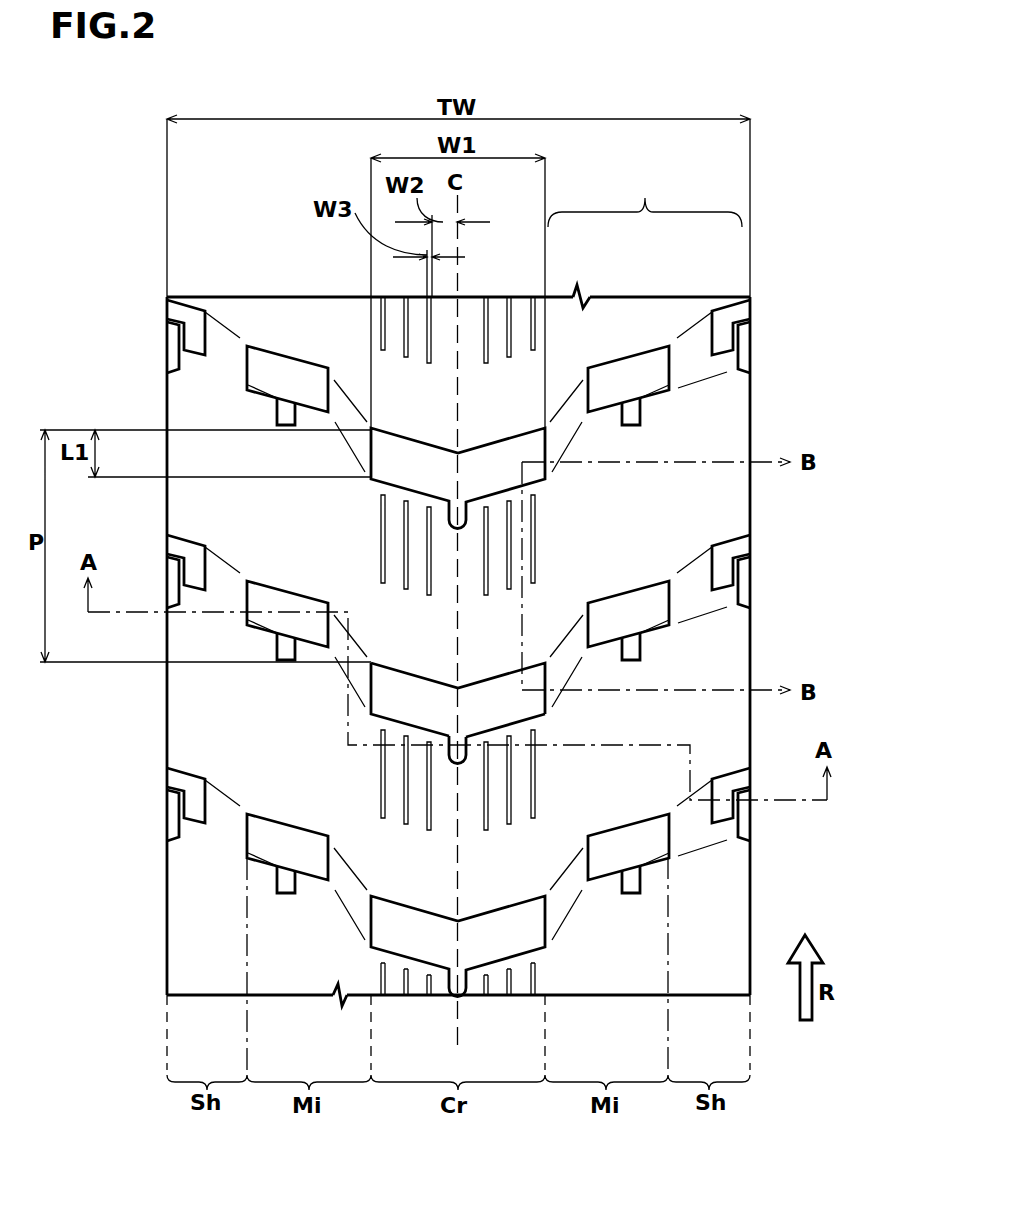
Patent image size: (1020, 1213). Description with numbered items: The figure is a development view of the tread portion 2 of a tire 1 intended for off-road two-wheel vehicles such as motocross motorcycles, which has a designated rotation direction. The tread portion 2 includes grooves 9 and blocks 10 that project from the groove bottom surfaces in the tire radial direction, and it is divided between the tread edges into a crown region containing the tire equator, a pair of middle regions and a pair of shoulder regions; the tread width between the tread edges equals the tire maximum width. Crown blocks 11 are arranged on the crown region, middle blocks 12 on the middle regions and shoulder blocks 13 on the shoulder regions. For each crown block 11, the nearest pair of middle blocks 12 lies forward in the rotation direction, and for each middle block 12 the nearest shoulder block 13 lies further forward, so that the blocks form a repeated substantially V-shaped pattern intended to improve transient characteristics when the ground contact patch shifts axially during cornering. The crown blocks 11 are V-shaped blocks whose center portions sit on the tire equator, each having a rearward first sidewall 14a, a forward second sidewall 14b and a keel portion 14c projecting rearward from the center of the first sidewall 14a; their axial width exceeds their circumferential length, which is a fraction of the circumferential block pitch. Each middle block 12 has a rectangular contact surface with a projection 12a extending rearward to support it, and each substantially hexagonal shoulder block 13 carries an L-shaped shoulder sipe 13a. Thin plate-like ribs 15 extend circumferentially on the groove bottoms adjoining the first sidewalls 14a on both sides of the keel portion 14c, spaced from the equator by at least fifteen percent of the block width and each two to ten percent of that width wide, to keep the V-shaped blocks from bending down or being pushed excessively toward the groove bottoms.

The tire 1 is at (775, 246).
The tread portion 2 is at (183, 277).
The groove 9 is at (693, 428).
The block 10 is at (645, 198).
The crown block 11 is at (338, 607).
The first sidewall 14a is at (390, 728).
The second sidewall 14b is at (388, 659).
The keel portion 14c is at (455, 762).
The middle block 12 is at (285, 372).
The projection 12a is at (640, 652).
The shoulder block 13 is at (173, 352).
The shoulder sipe 13a is at (740, 578).
The rib 15 is at (430, 330).